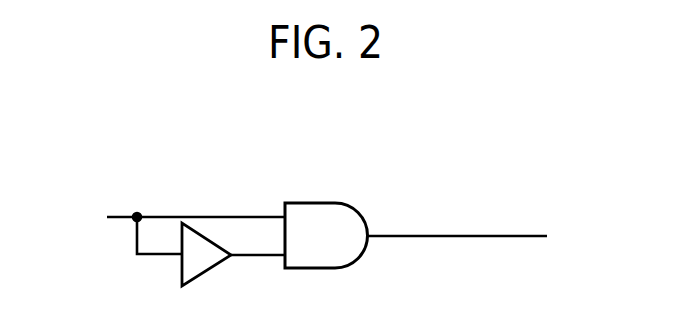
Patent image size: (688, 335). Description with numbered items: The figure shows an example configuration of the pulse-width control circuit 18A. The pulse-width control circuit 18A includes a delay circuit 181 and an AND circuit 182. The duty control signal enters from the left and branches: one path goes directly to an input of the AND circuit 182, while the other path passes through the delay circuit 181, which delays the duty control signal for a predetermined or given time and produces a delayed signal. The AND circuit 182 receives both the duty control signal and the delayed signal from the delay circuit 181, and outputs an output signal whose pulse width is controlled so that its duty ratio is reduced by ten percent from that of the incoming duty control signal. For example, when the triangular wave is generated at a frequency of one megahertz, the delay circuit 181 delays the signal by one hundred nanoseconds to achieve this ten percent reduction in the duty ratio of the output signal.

The pulse-width control circuit 18A is at (368, 163).
The delay circuit 181 is at (182, 277).
The AND circuit 182 is at (317, 268).